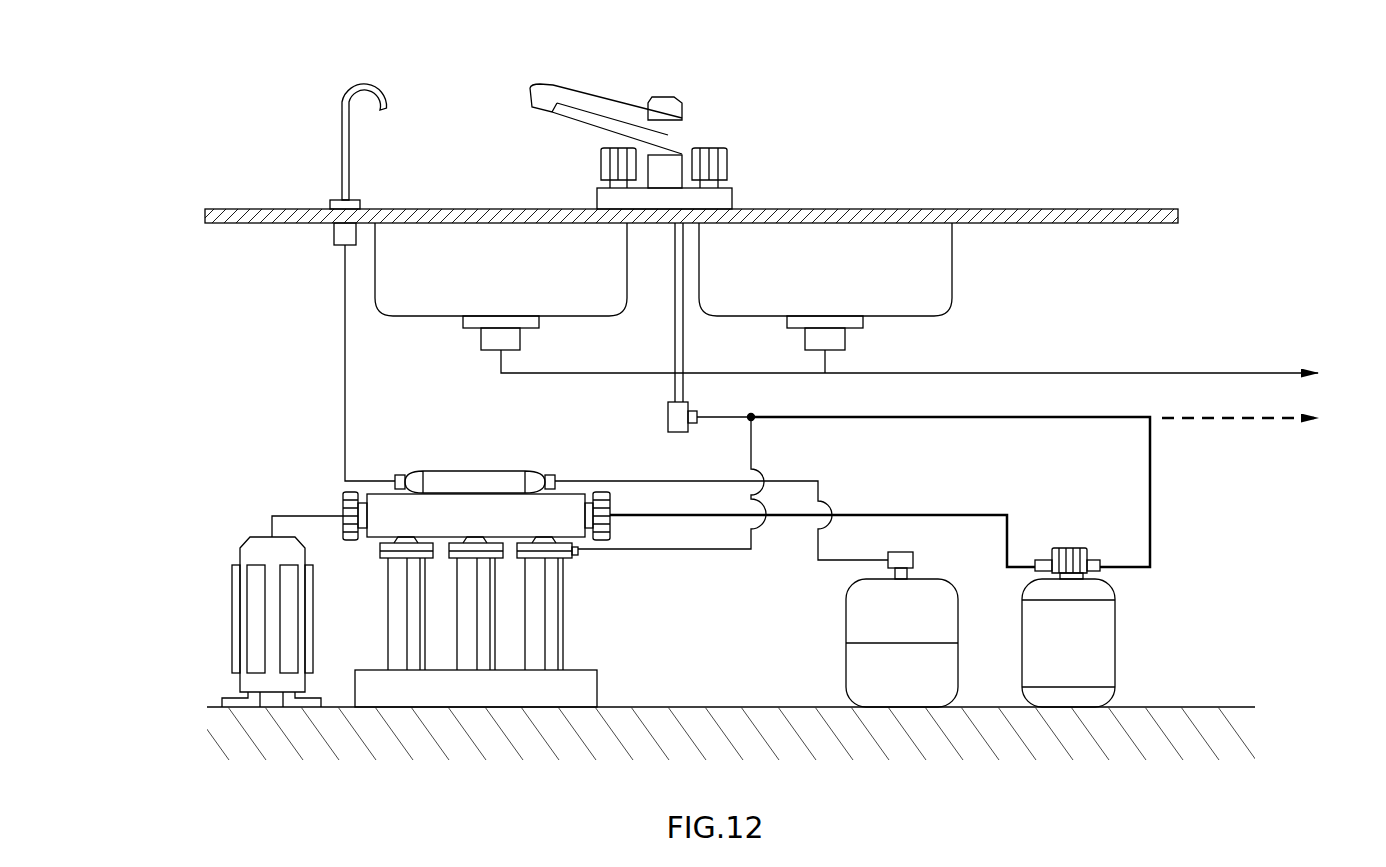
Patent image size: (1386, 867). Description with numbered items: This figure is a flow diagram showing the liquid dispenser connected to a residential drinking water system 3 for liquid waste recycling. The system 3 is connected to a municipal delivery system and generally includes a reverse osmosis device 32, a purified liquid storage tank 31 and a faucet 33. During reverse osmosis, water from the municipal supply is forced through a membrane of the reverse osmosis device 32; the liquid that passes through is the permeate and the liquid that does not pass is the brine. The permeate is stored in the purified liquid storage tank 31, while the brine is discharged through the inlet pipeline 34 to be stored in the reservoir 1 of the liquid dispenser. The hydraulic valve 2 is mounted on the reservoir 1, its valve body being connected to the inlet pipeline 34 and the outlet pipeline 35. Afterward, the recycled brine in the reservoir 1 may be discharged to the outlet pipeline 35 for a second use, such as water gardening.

The reservoir 1 is at (1108, 650).
The hydraulic valve 2 is at (1102, 528).
The residential drinking water system 3 is at (185, 300).
The purified liquid storage tank 31 is at (865, 635).
The reverse osmosis device 32 is at (628, 622).
The faucet 33 is at (343, 153).
The inlet pipeline 34 is at (935, 516).
The outlet pipeline 35 is at (1150, 552).